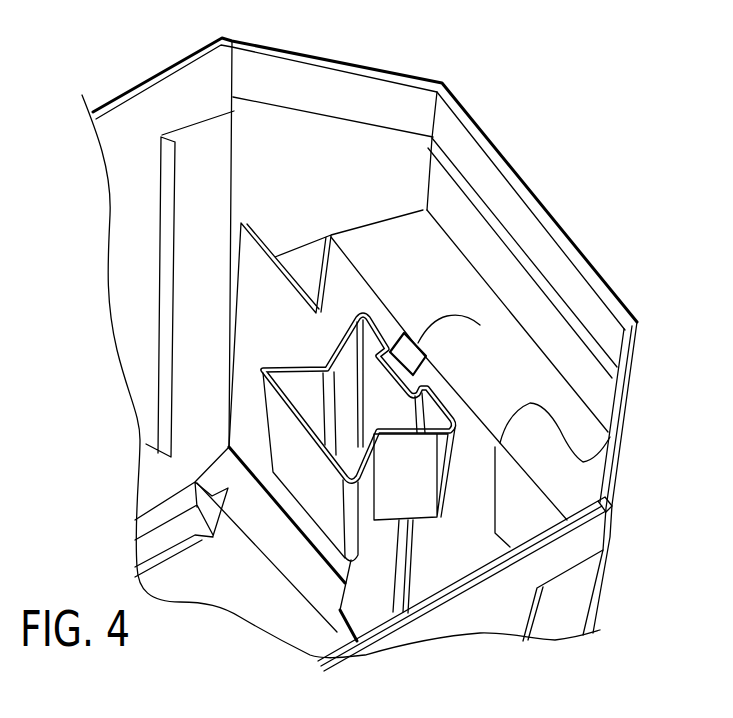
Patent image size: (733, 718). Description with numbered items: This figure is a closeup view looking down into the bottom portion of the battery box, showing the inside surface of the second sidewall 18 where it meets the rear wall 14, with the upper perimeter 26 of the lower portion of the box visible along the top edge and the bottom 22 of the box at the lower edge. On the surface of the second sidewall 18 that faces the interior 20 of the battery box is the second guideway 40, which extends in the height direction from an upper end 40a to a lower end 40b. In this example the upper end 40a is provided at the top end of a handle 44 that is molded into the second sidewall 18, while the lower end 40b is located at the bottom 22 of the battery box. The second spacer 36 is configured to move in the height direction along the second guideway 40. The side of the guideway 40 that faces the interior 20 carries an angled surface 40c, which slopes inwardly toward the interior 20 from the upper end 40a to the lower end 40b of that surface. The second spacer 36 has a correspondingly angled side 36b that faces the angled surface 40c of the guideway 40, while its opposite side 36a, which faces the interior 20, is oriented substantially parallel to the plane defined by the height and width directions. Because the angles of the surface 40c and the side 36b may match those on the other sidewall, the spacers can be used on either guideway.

The rear wall 14 is at (123, 237).
The second sidewall 18 is at (603, 320).
The interior 20 is at (205, 157).
The bottom 22 is at (175, 572).
The upper perimeter 26 is at (552, 531).
The second spacer 36 is at (376, 438).
The opposite side of the second spacer 36a is at (277, 428).
The side of the second spacer 36b is at (432, 415).
The second guideway 40 is at (424, 565).
The upper end 40a is at (413, 327).
The lower end 40b is at (333, 632).
The angled surface 40c is at (352, 599).
The handle 44 is at (470, 340).